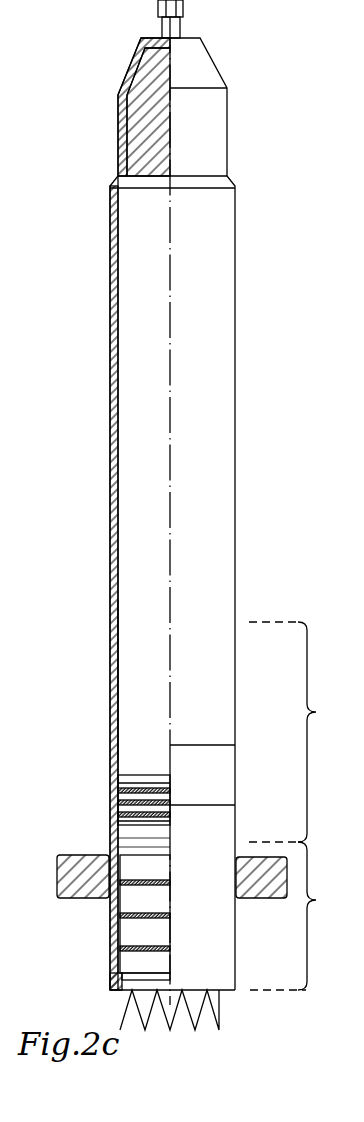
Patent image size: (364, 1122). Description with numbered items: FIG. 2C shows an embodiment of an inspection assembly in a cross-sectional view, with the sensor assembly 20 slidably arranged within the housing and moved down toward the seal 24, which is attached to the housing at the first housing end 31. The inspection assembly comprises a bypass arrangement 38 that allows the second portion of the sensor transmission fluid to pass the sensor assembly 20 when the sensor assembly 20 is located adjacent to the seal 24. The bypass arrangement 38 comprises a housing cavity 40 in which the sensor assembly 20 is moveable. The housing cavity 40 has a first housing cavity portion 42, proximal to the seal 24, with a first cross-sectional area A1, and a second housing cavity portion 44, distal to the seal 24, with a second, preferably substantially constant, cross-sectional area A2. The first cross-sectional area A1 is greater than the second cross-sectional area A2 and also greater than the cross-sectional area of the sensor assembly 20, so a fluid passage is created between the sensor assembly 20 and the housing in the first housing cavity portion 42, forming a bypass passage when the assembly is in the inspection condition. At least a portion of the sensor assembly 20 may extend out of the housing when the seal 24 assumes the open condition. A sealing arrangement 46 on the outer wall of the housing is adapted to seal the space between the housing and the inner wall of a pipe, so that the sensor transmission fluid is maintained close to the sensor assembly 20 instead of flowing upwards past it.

The second cross-sectional area A2 is at (131, 696).
The housing cavity 40 is at (165, 627).
The second housing cavity portion 44 is at (303, 732).
The first housing cavity portion 42 is at (302, 916).
The sealing arrangement 46 is at (75, 850).
The bypass arrangement 38 is at (100, 835).
The sensor assembly 20 is at (128, 928).
The seal 24 is at (150, 987).
The first cross-sectional area A1 is at (125, 990).
The first housing end 31 is at (228, 1003).